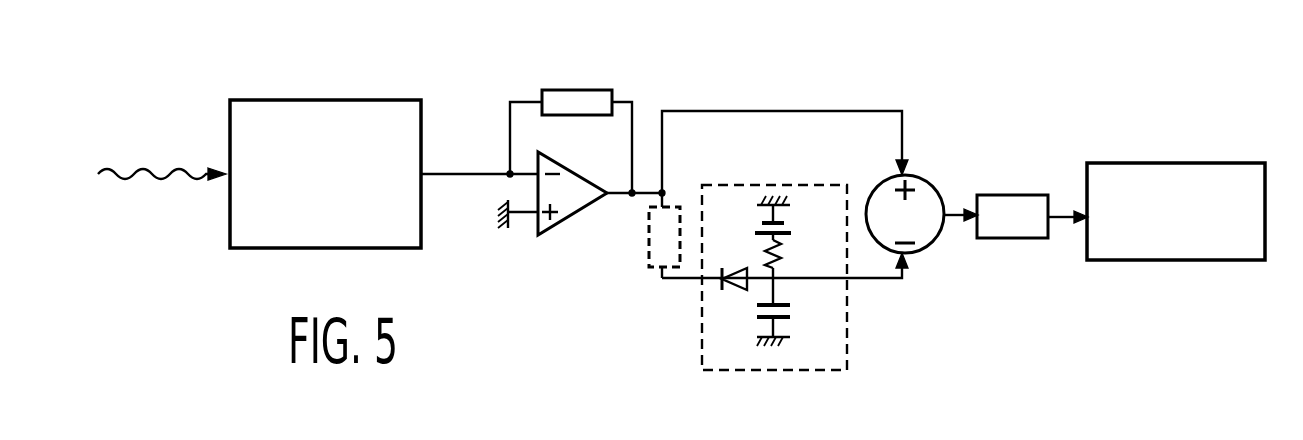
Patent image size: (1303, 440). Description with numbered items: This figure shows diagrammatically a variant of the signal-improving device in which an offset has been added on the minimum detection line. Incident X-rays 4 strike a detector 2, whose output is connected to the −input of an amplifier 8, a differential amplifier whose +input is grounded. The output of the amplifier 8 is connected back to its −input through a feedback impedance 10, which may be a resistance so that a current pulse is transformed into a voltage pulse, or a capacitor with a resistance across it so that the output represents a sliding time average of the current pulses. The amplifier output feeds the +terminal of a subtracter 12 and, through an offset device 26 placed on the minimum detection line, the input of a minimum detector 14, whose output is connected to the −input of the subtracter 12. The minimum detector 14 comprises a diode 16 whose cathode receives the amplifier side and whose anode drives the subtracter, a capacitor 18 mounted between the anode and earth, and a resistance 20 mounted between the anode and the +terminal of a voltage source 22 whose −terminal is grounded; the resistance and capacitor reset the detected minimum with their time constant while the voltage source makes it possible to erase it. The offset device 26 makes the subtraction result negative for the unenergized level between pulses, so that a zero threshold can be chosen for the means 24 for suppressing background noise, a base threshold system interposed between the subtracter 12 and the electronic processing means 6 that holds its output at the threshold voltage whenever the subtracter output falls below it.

The detector 2 is at (332, 103).
The incident X-rays 4 is at (146, 163).
The electronic means for signal processing 6 is at (1190, 172).
The amplifier 8 is at (578, 210).
The feedback impedance 10 is at (583, 90).
The subtracter 12 is at (931, 240).
The minimum detector 14 is at (778, 260).
The diode 16 is at (733, 293).
The capacitor 18 is at (785, 306).
The resistance 20 is at (780, 258).
The voltage source 22 is at (760, 228).
The means for suppressing background noise 24 is at (1015, 195).
The offset device 26 is at (648, 245).